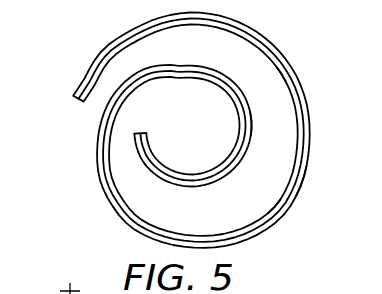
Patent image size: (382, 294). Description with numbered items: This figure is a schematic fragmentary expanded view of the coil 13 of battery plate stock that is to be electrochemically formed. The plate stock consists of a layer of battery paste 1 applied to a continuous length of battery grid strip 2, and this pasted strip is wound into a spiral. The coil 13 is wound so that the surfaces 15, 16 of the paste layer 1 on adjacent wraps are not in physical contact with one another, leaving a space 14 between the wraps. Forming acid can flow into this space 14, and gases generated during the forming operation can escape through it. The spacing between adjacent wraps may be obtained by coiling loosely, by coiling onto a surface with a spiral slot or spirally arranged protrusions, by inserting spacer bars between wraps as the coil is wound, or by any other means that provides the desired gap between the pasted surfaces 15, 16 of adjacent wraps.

The battery paste layer 1 is at (111, 42).
The battery grid strip 2 is at (83, 77).
The coil 13 is at (301, 183).
The space between wraps 14 is at (263, 87).
The pasted surface 15 is at (258, 138).
The pasted surface 16 is at (271, 205).